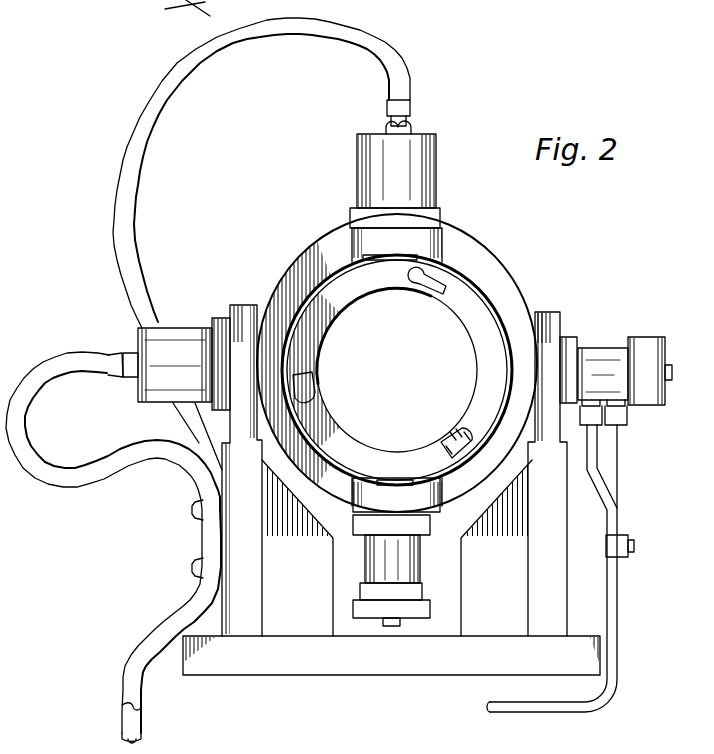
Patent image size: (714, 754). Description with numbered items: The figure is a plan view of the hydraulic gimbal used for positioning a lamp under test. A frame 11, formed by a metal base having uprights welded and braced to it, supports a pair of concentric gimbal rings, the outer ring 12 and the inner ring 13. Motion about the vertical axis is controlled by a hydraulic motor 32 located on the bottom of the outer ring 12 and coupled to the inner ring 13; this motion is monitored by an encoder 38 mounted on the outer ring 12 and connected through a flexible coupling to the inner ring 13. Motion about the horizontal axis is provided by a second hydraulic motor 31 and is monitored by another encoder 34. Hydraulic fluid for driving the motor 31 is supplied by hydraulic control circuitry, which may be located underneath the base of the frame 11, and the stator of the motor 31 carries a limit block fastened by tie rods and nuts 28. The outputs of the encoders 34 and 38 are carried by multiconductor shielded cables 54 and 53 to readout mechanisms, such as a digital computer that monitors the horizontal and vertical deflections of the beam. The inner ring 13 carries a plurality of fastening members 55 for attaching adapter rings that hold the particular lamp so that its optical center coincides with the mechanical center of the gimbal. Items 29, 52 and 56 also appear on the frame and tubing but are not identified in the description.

The frame 11 is at (232, 536).
The outer gimbal ring 12 is at (310, 257).
The inner gimbal ring 13 is at (362, 290).
The nuts 28 is at (634, 546).
The clamp 29 is at (203, 497).
The hydraulic motor 31 is at (603, 347).
The hydraulic motor 32 is at (420, 569).
The encoder 34 is at (186, 327).
The encoder 38 is at (437, 162).
The tube 52 is at (618, 610).
The multiconductor shielded cable 53 is at (36, 432).
The multiconductor shielded cable 54 is at (118, 263).
The fastening members 55 is at (426, 288).
The bolt 56 is at (200, 516).